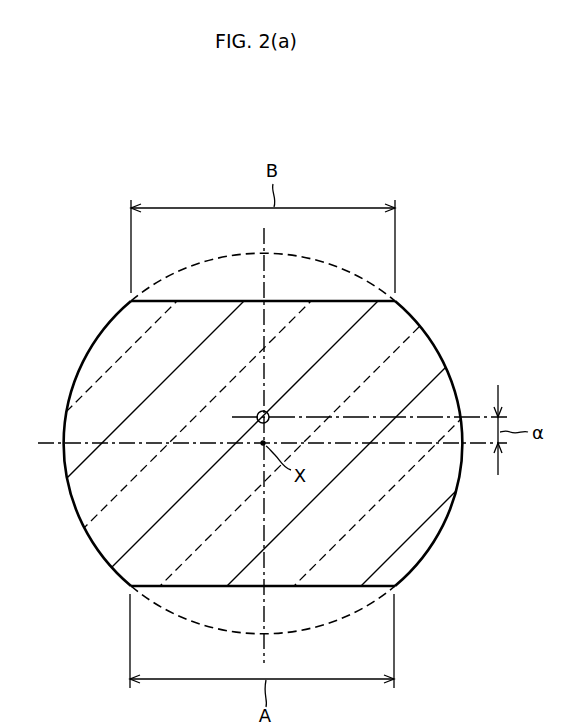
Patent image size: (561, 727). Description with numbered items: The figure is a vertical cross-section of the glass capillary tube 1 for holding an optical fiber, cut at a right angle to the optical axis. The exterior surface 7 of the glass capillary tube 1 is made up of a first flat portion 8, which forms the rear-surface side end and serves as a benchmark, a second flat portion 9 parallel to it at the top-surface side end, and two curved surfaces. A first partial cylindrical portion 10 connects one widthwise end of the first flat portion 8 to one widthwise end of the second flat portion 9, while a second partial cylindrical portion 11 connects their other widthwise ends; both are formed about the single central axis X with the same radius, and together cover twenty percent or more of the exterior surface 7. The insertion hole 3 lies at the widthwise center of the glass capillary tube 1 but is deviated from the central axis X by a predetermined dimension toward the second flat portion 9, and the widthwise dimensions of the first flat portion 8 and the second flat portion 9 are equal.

The glass capillary tube 1 is at (280, 430).
The insertion hole 3 is at (258, 412).
The exterior surface 7 is at (437, 344).
The first flat portion 8 is at (326, 588).
The second flat portion 9 is at (341, 300).
The first partial cylindrical portion 10 is at (87, 355).
The second partial cylindrical portion 11 is at (438, 532).